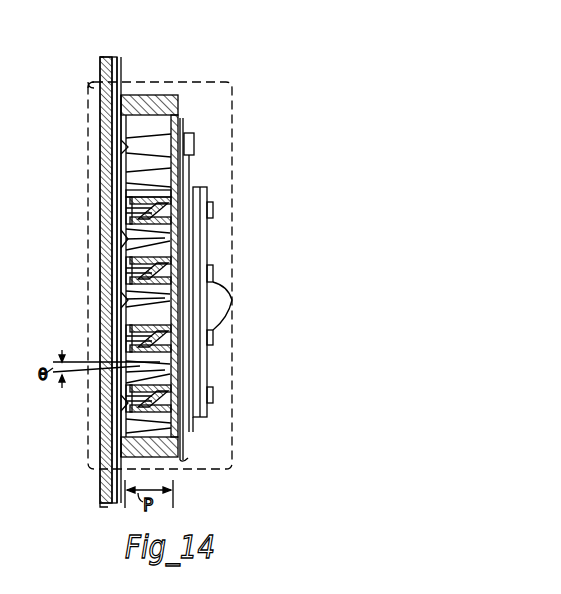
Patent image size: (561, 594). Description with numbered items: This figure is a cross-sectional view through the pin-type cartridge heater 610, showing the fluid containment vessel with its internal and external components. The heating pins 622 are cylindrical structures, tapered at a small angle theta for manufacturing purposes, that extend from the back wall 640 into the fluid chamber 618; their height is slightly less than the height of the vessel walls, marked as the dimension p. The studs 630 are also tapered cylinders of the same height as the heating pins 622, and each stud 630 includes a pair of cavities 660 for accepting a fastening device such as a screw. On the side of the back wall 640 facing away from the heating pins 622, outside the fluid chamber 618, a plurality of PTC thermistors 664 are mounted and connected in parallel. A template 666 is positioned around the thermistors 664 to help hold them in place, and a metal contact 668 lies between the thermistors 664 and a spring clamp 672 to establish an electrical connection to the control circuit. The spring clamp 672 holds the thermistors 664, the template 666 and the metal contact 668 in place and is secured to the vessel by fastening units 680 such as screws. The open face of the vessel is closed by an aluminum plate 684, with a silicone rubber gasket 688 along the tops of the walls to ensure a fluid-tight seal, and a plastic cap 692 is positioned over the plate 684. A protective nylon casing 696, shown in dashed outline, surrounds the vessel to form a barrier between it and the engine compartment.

The pin-type cartridge heater 610 is at (197, 480).
The fluid chamber 618 is at (130, 128).
The heating pins 622 is at (125, 147).
The studs 630 is at (132, 217).
The back wall 640 is at (177, 93).
The cavities 660 is at (128, 193).
The thermistors 664 is at (150, 270).
The template 666 is at (178, 128).
The metal contact 668 is at (187, 143).
The spring clamp 672 is at (192, 190).
The fastening units 680 is at (232, 300).
The metal plate 684 is at (113, 57).
The silicone rubber gasket 688 is at (121, 93).
The plastic cap 692 is at (106, 57).
The protective casing 696 is at (88, 86).